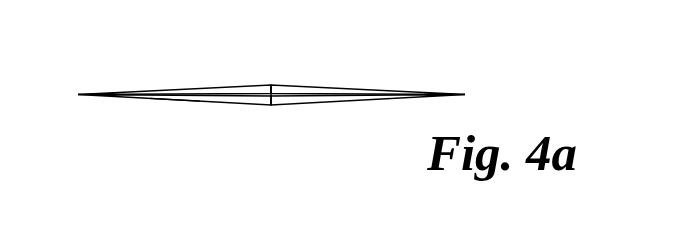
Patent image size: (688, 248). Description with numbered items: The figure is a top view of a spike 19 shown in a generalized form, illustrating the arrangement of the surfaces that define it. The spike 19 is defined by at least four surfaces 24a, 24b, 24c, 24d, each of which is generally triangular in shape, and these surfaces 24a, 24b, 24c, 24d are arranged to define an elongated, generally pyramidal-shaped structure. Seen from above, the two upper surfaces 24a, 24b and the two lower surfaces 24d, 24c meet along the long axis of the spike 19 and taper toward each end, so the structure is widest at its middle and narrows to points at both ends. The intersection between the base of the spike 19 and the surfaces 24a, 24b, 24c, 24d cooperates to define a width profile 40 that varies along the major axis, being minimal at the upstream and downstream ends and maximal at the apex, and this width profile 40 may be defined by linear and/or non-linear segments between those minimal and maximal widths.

The spike 19 is at (271, 85).
The surface 24a is at (252, 87).
The surface 24b is at (294, 87).
The surface 24c is at (291, 101).
The surface 24d is at (252, 101).
The width profile 40 is at (174, 100).